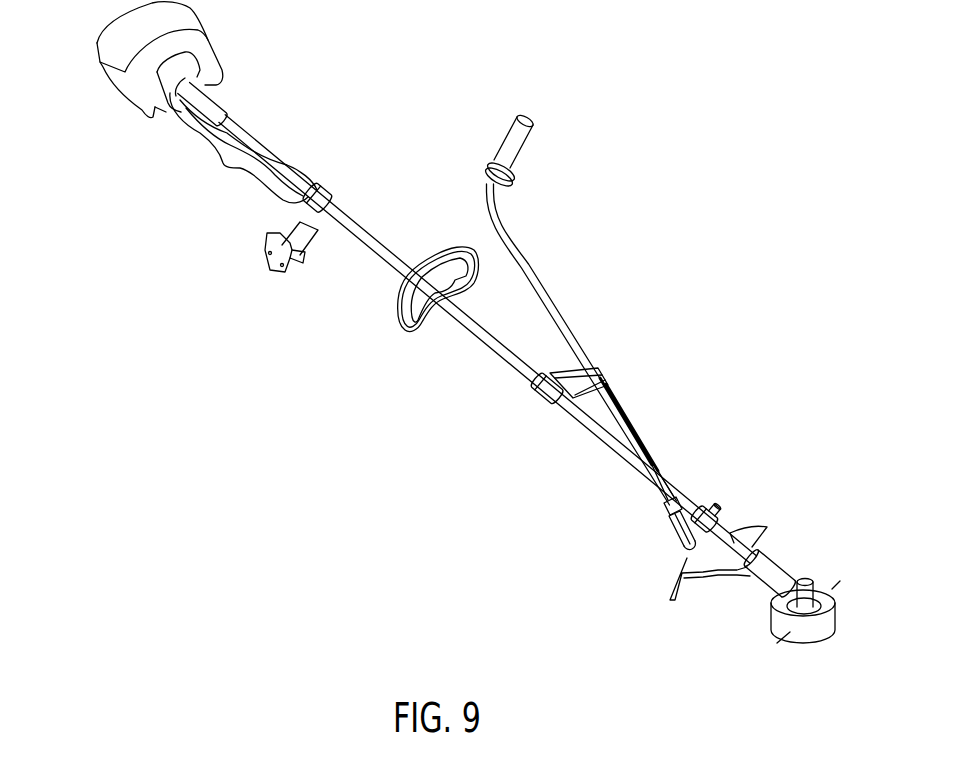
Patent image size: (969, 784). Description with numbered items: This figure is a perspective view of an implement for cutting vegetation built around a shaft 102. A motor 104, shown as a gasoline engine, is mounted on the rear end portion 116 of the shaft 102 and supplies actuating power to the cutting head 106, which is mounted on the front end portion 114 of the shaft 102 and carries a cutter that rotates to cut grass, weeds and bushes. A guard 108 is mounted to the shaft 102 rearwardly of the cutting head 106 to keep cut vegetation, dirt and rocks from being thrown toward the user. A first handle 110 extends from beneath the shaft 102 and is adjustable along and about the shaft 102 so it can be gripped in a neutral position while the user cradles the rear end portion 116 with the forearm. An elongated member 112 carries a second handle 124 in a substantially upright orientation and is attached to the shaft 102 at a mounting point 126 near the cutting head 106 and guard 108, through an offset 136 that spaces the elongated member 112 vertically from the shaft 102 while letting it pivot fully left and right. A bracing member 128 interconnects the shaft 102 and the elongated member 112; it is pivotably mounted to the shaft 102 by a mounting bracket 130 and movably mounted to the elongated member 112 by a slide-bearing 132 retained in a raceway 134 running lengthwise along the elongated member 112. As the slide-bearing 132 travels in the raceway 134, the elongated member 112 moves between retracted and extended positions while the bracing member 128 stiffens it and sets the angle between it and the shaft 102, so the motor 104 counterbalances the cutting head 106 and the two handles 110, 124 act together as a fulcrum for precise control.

The shaft 102 is at (610, 439).
The motor 104 is at (110, 81).
The cutting head 106 is at (773, 627).
The guard 108 is at (690, 570).
The first handle 110 is at (272, 256).
The elongated member 112 is at (570, 317).
The front end portion 114 is at (733, 490).
The rear end portion 116 is at (223, 165).
The second handle 124 is at (530, 120).
The mounting point 126 is at (716, 503).
The bracing member 128 is at (593, 356).
The mounting bracket 130 is at (540, 390).
The slide-bearing 132 is at (602, 375).
The raceway 134 is at (630, 430).
The offset 136 is at (698, 536).